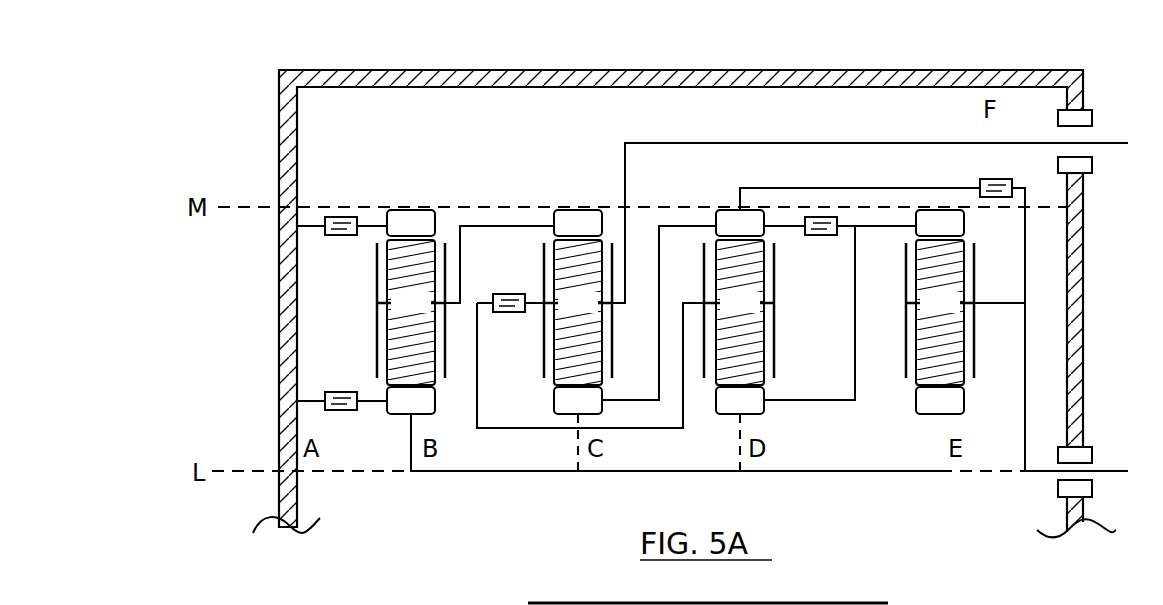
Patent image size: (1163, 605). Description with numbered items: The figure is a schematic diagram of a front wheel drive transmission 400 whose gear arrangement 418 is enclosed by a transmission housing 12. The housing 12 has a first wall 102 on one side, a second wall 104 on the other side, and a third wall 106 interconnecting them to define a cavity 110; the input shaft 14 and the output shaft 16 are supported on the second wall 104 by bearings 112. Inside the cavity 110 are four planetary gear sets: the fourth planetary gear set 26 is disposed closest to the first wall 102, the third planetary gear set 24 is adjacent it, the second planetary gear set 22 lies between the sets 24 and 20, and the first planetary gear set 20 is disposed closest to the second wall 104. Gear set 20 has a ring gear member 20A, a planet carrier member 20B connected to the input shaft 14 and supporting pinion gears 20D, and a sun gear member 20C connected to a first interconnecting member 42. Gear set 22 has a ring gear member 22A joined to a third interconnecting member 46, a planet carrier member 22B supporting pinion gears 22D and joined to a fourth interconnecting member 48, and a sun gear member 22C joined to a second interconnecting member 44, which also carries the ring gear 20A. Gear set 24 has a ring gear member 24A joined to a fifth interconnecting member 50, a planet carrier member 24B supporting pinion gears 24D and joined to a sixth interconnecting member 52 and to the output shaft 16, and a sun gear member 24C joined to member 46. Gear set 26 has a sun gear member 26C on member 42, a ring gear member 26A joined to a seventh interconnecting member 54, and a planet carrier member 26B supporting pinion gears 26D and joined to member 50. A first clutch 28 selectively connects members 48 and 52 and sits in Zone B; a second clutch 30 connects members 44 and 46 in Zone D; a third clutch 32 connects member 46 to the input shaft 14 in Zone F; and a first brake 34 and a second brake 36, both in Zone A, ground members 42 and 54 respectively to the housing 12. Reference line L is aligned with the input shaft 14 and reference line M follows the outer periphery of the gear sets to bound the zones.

The transmission 400 is at (661, 271).
The transmission housing 12 is at (661, 277).
The third wall 106 is at (497, 70).
The cavity 110 is at (545, 87).
The first wall 102 is at (282, 300).
The gear arrangement 418 is at (757, 105).
The bearings 112 is at (1092, 118).
The output shaft 16 is at (1112, 143).
The input shaft 14 is at (1112, 471).
The second wall 104 is at (1084, 300).
The first planetary gear set 20 is at (918, 262).
The second planetary gear set 22 is at (762, 284).
The third planetary gear set 24 is at (549, 274).
The fourth planetary gear set 26 is at (379, 274).
The ring gear member 20A is at (940, 223).
The planet carrier member 20B is at (904, 296).
The sun gear member 20C is at (940, 400).
The pinion gears 20D is at (940, 312).
The ring gear member 22A is at (740, 223).
The planet carrier member 22B is at (776, 352).
The sun gear member 22C is at (740, 400).
The pinion gears 22D is at (740, 312).
The ring gear member 24A is at (578, 223).
The planet carrier member 24B is at (545, 360).
The sun gear member 24C is at (578, 400).
The pinion gears 24D is at (578, 312).
The ring gear member 26A is at (411, 223).
The planet carrier member 26B is at (376, 290).
The sun gear member 26C is at (411, 400).
The pinion gears 26D is at (411, 312).
The first clutch 28 is at (502, 294).
The second clutch 30 is at (816, 236).
The third clutch 32 is at (994, 179).
The first brake 34 is at (338, 390).
The second brake 36 is at (338, 236).
The first interconnecting member 42 is at (370, 405).
The second interconnecting member 44 is at (852, 400).
The third interconnecting member 46 is at (783, 188).
The fourth interconnecting member 48 is at (520, 428).
The fifth interconnecting member 50 is at (493, 226).
The sixth interconnecting member 52 is at (522, 312).
The seventh interconnecting member 54 is at (380, 214).